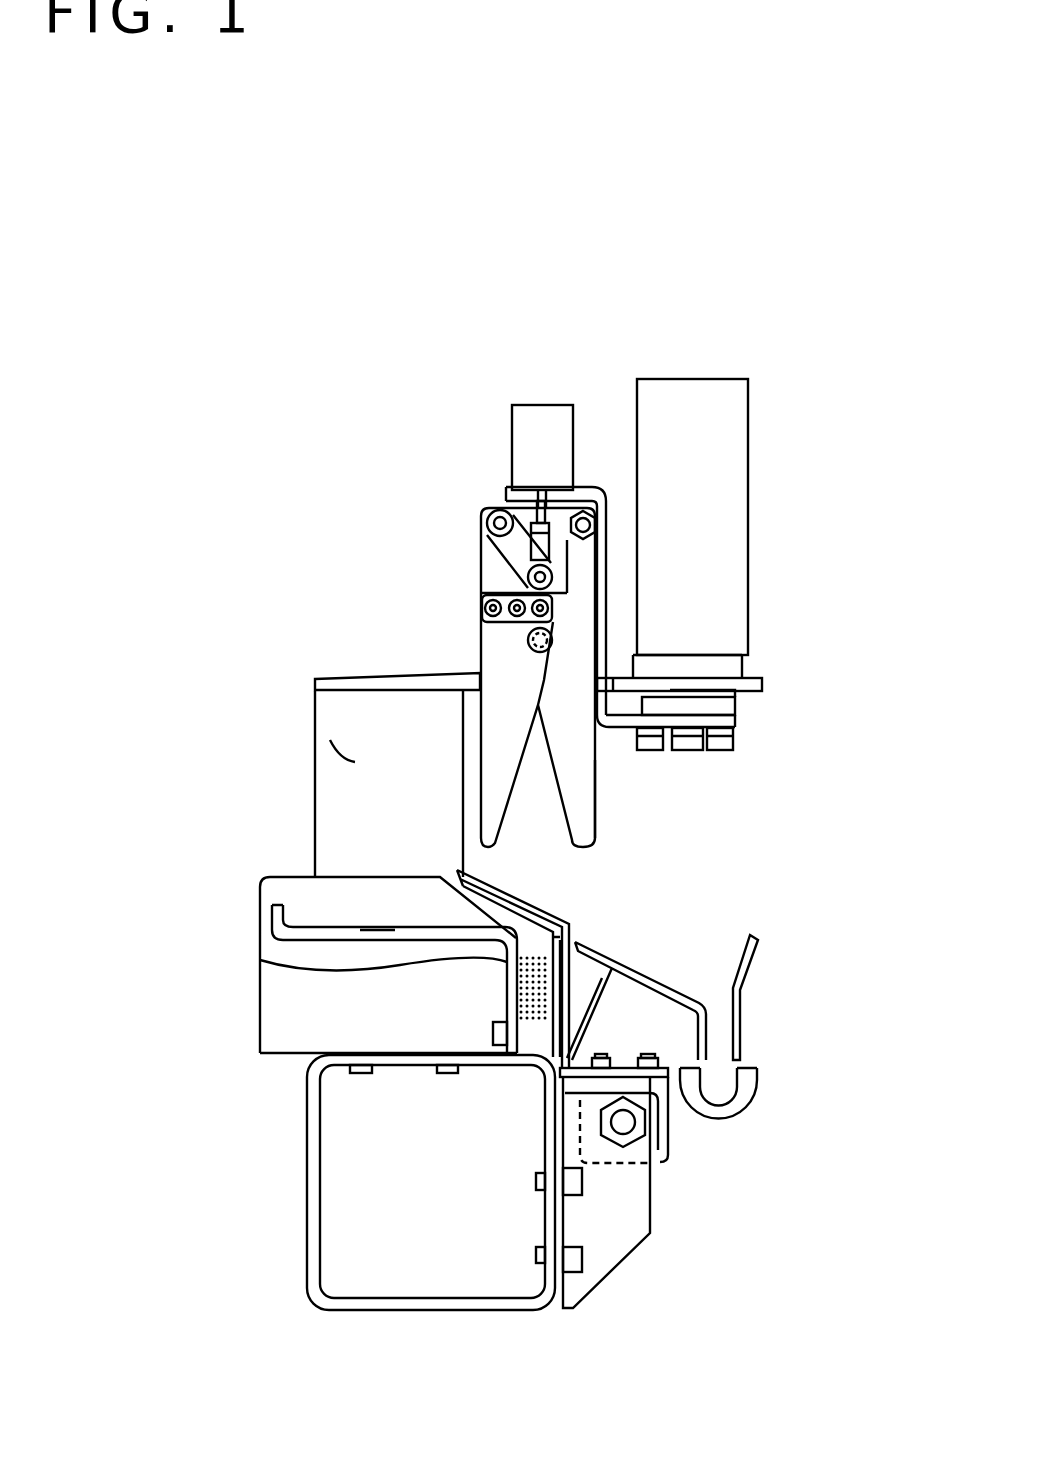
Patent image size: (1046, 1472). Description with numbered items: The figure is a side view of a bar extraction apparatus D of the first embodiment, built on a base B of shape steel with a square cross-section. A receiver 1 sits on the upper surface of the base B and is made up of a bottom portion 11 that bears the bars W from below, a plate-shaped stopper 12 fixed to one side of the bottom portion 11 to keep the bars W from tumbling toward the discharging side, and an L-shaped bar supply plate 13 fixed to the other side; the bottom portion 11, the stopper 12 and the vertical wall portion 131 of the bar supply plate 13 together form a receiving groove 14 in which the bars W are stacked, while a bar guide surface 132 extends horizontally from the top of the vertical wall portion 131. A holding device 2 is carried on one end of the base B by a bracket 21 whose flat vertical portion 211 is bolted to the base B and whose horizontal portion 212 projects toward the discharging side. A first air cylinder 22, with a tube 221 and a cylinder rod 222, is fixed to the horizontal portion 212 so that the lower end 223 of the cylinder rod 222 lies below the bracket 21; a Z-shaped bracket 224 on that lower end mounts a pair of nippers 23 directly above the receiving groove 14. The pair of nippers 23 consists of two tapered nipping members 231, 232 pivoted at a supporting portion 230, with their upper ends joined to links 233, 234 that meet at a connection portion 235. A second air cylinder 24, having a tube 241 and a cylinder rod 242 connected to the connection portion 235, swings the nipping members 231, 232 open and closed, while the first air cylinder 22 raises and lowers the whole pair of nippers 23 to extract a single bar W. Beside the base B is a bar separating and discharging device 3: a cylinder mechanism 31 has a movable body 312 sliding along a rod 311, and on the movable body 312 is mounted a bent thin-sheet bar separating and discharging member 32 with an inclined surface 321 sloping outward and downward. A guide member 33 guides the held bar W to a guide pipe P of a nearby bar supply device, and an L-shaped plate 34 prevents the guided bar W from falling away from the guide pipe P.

The receiver 1 is at (490, 995).
The bottom portion 11 is at (542, 1042).
The stopper 12 is at (557, 948).
The bar supply plate 13 is at (267, 876).
The vertical wall portion 131 is at (260, 960).
The bar guide surface 132 is at (323, 930).
The receiving groove 14 is at (378, 935).
The holding device 2 is at (770, 542).
The bracket 21 is at (340, 722).
The vertical portion 211 is at (350, 760).
The horizontal portion 212 is at (345, 674).
The first air cylinder 22 is at (735, 430).
The tube 221 is at (740, 482).
The cylinder rod 222 is at (708, 710).
The lower end 223 is at (740, 721).
The bracket 224 is at (740, 745).
The pair of nippers 23 is at (477, 578).
The supporting portion 230 is at (490, 606).
The nipping member 231 is at (528, 642).
The nipping member 232 is at (585, 795).
The link 233 is at (528, 580).
The link 234 is at (612, 482).
The connection portion 235 is at (548, 565).
The second air cylinder 24 is at (522, 423).
The tube 241 is at (550, 412).
The cylinder rod 242 is at (535, 520).
The bar separating and discharging device 3 is at (688, 946).
The cylinder mechanism 31 is at (770, 1150).
The rod 311 is at (630, 1128).
The movable body 312 is at (665, 1138).
The bar separating and discharging member 32 is at (623, 1068).
The inclined surface 321 is at (518, 895).
The guide member 33 is at (620, 960).
The plate 34 is at (758, 950).
The bar W is at (533, 1017).
The base B is at (307, 1200).
The guide pipe P is at (750, 1090).
The bar extraction apparatus D is at (283, 551).